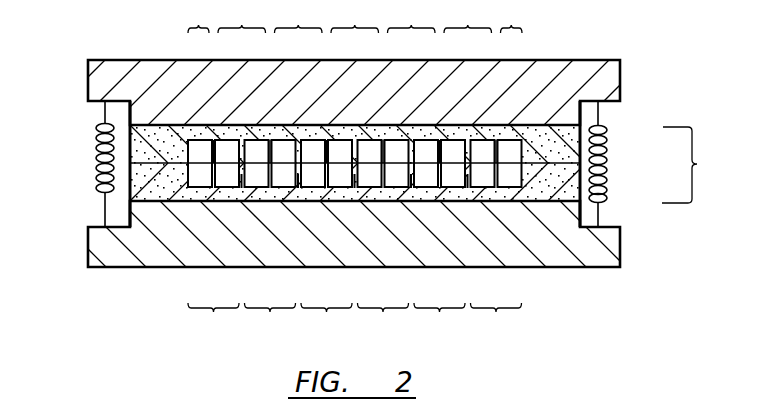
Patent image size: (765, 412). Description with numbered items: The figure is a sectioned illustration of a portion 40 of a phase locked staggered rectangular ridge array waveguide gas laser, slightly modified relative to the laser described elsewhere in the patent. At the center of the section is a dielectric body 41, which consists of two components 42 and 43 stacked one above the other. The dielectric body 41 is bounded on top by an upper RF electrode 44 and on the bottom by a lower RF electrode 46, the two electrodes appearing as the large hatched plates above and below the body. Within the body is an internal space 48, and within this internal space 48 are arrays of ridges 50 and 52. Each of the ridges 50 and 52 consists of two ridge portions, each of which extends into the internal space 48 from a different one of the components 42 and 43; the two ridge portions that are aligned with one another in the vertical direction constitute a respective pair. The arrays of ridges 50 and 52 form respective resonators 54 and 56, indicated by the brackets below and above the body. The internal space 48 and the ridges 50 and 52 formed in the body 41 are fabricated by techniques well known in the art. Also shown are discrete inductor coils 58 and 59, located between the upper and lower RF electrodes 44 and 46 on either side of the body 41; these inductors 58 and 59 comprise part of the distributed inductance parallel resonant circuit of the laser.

The portion of the phase locked ridge waveguide gas laser 40 is at (124, 33).
The dielectric body 41 is at (695, 165).
The component of the dielectric body 42 is at (553, 201).
The component of the dielectric body 43 is at (140, 124).
The upper RF electrode 44 is at (603, 60).
The lower RF electrode 46 is at (535, 257).
The internal space 48 is at (227, 178).
The ridges 50 is at (298, 190).
The ridges 52 is at (270, 140).
The resonators 54 is at (355, 319).
The resonators 56 is at (355, 17).
The discrete inductor coil 58 is at (97, 157).
The discrete inductor coil 59 is at (608, 165).